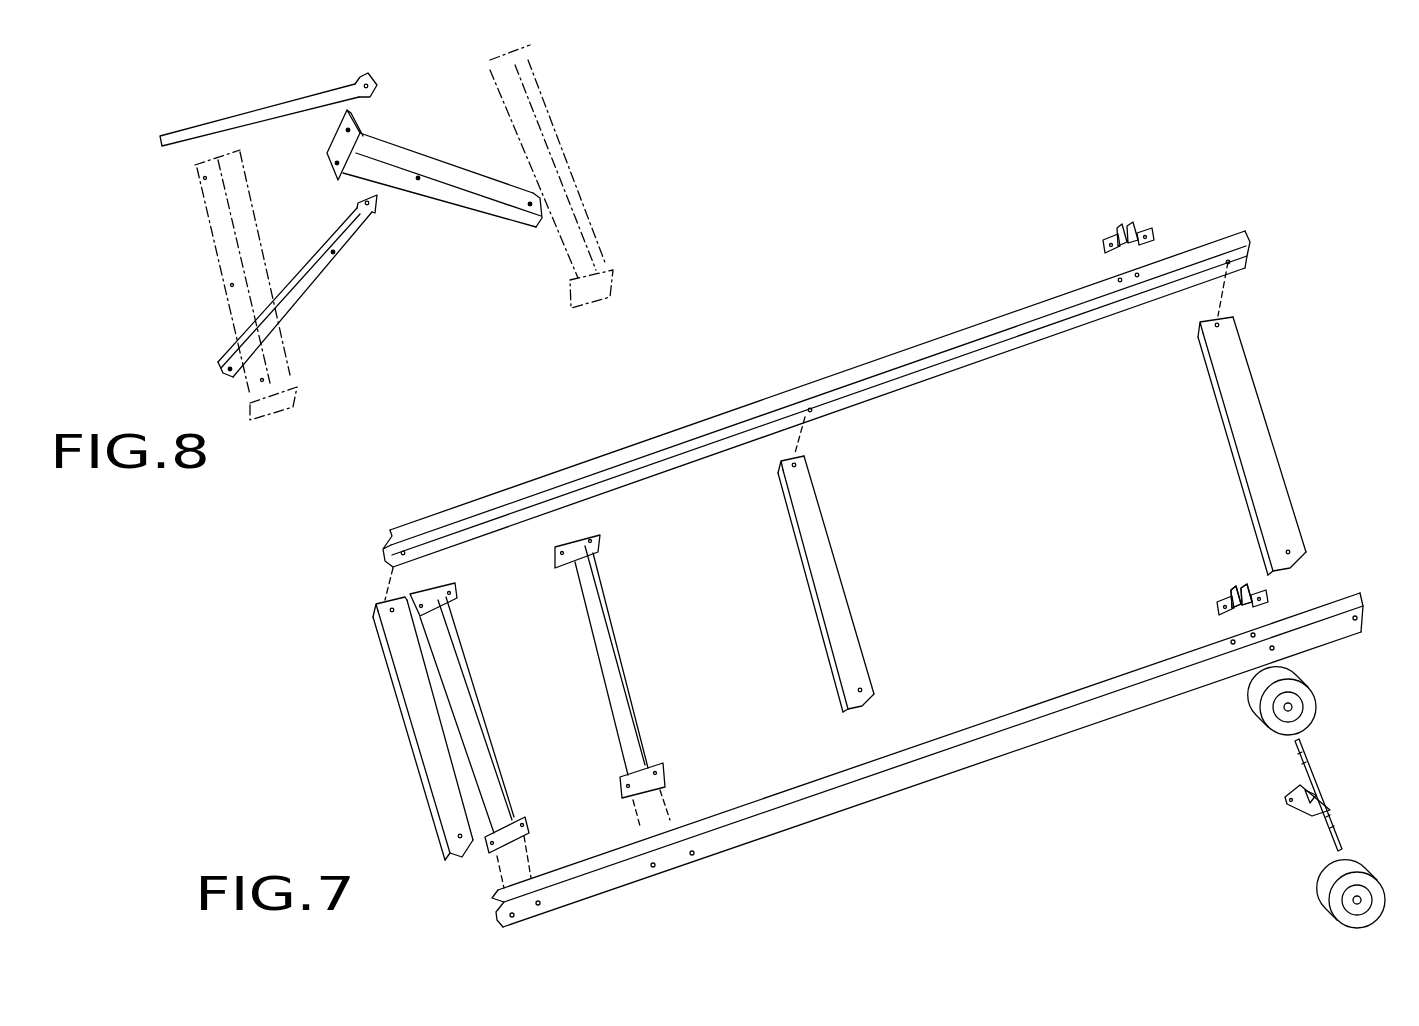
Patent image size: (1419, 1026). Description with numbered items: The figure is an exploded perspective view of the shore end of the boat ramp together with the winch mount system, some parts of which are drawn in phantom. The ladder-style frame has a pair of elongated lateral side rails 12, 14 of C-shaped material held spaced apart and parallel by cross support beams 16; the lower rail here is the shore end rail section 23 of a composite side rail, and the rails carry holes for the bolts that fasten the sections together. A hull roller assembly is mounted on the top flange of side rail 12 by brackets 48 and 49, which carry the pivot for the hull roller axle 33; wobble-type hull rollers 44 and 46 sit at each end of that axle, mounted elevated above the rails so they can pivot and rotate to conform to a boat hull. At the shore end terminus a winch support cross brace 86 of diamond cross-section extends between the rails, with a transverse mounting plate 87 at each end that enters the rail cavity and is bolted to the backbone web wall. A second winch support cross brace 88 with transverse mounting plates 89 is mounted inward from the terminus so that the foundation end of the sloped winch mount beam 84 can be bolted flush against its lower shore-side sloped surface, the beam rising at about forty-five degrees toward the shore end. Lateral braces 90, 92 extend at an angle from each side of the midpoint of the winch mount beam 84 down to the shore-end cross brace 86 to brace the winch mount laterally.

In FIG. 7, the lateral side rail 12 is at (960, 770).
In FIG. 7, the lateral side rail 14 is at (772, 403).
In FIG. 7, the cross support beam 16 is at (835, 593).
In FIG. 7, the shore end rail section 23 is at (1108, 718).
In FIG. 7, the hull roller axle 33 is at (1312, 782).
In FIG. 7, the hull roller 44 is at (1290, 681).
In FIG. 7, the hull roller 46 is at (1358, 873).
In FIG. 7, the bracket 48 is at (1218, 604).
In FIG. 7, the bracket 49 is at (1262, 590).
In FIG. 8, the winch mount beam 84 is at (447, 172).
In FIG. 7, the winch support cross brace 86 is at (472, 688).
In FIG. 8, the winch support cross brace 86 is at (232, 238).
In FIG. 7, the transverse mounting plate 87 is at (452, 585).
In FIG. 7, the winch support cross brace 88 is at (612, 650).
In FIG. 8, the winch support cross brace 88 is at (578, 208).
In FIG. 7, the transverse mounting plate 89 is at (595, 538).
In FIG. 8, the lateral brace 90 is at (296, 300).
In FIG. 8, the lateral brace 92 is at (283, 107).